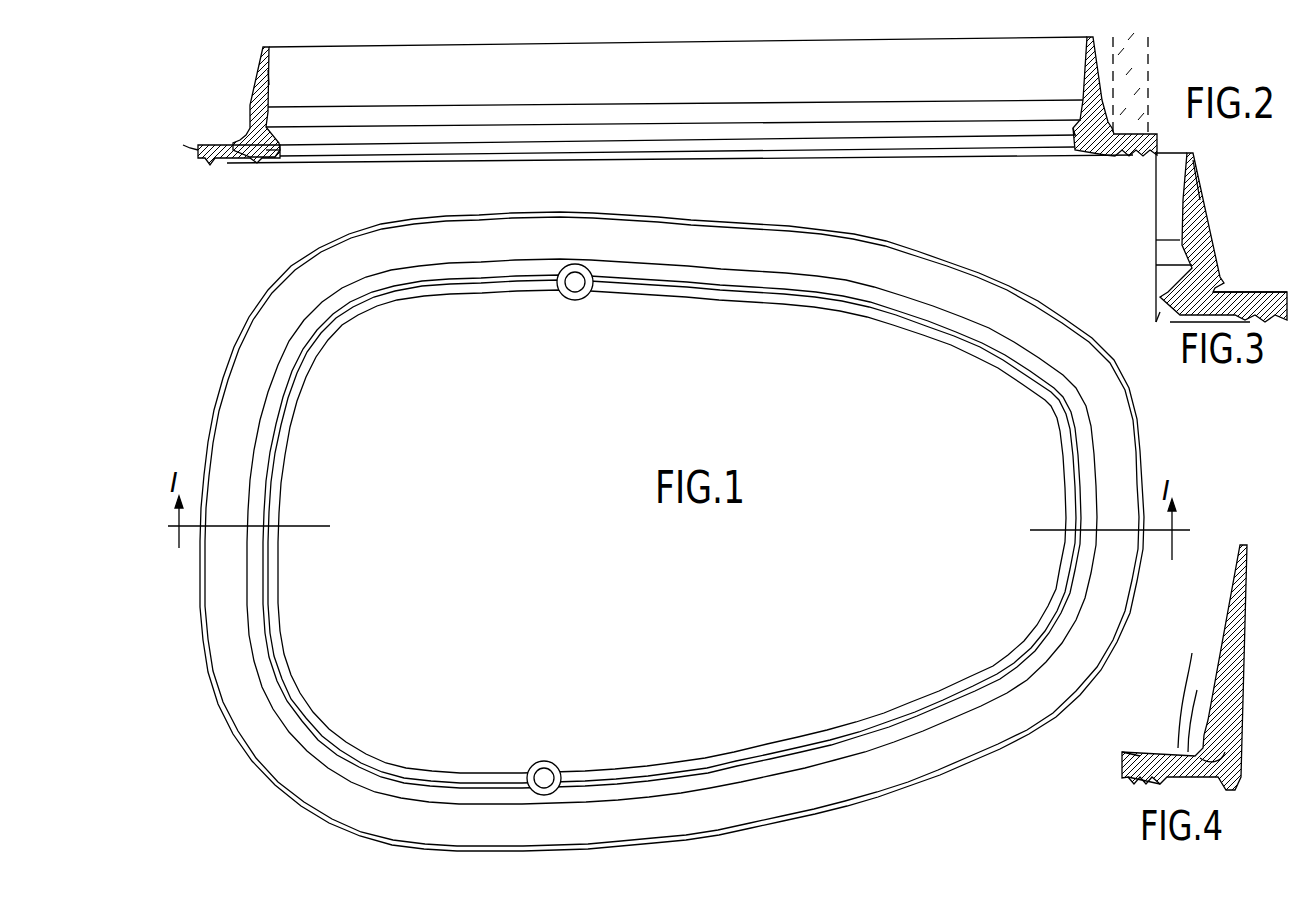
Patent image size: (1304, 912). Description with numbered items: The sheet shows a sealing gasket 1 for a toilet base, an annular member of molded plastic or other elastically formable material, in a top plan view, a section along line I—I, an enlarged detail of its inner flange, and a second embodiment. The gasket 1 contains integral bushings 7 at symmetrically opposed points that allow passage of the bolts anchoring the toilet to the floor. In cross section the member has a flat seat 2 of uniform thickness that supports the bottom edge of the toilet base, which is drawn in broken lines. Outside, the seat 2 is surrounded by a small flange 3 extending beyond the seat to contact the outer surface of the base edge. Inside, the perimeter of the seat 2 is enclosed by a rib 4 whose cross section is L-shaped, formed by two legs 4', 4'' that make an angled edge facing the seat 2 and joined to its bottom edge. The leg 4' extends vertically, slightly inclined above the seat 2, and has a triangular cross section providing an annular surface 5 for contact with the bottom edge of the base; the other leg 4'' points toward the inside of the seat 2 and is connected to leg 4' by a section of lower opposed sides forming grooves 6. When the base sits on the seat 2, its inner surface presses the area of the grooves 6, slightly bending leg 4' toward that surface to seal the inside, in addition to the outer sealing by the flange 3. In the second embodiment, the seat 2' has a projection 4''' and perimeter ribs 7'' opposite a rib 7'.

In FIG. 1, the sealing gasket 1 is at (938, 252).
In FIG. 2, the sealing gasket 1 is at (884, 158).
In FIG. 1, the seat 2 is at (672, 489).
In FIG. 2, the seat 2 is at (235, 129).
In FIG. 3, the seat 2 is at (1250, 275).
In FIG. 2, the small flange 3 is at (198, 137).
In FIG. 1, the rib 4 is at (672, 531).
In FIG. 2, the rib 4 is at (1071, 96).
In FIG. 3, the rib 4 is at (1223, 237).
In FIG. 2, the leg 4' is at (244, 102).
In FIG. 3, the leg 4' is at (1226, 194).
In FIG. 2, the leg 4'' is at (262, 183).
In FIG. 4, the projection 4''' is at (1204, 685).
In FIG. 2, the annular surface 5 is at (268, 77).
In FIG. 3, the annular surface 5 is at (1180, 207).
In FIG. 2, the grooves 6 is at (1073, 121).
In FIG. 3, the grooves 6 is at (1158, 262).
In FIG. 1, the bushings 7 is at (567, 529).
In FIG. 4, the rib 7' is at (1201, 689).
In FIG. 4, the perimeter ribs 7'' is at (1111, 799).
In FIG. 4, the seat 2' is at (1146, 718).